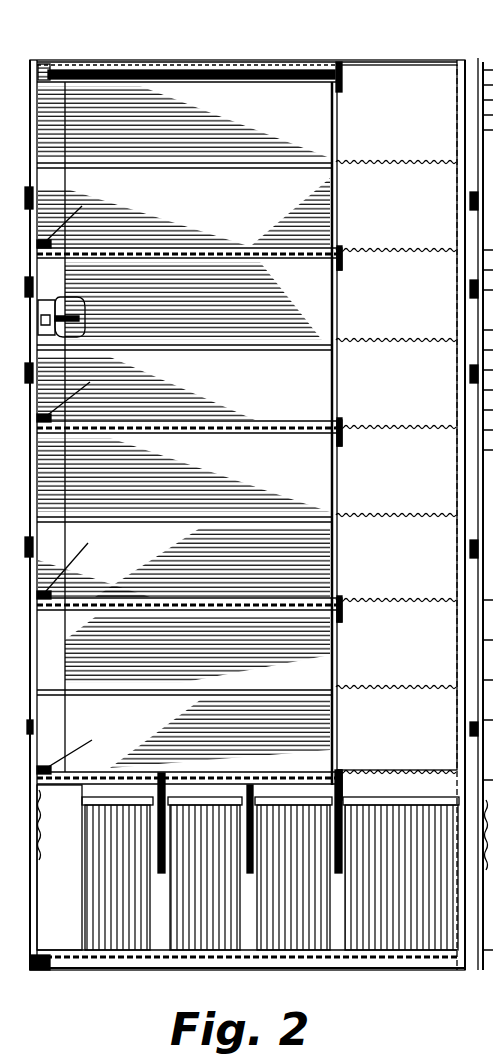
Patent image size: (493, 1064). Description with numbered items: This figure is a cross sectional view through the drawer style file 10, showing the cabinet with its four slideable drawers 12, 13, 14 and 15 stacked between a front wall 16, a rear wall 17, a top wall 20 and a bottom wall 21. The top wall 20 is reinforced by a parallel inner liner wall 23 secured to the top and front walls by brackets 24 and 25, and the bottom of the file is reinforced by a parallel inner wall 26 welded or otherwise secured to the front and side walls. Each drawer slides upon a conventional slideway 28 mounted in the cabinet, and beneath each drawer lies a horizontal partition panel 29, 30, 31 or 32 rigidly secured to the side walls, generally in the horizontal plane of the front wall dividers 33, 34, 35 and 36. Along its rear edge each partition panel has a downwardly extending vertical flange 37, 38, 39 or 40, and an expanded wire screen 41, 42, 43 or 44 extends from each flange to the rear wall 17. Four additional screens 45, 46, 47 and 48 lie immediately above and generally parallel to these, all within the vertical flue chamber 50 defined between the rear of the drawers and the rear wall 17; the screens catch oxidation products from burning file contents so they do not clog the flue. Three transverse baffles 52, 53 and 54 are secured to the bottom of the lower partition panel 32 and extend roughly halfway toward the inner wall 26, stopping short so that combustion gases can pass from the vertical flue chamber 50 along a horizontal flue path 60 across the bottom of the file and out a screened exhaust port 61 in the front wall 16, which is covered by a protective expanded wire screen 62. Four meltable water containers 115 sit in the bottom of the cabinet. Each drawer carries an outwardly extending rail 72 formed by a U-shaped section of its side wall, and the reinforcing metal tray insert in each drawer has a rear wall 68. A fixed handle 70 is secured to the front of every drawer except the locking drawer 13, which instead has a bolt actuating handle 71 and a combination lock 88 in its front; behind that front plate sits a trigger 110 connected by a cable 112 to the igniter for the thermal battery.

The drawer style file 10 is at (443, 976).
The slideable drawer 12 is at (302, 104).
The locking drawer 13 is at (310, 278).
The slideable drawer 14 is at (322, 455).
The slideable drawer 15 is at (322, 650).
The front wall 16 is at (32, 62).
The rear wall 17 is at (458, 490).
The top wall 20 is at (220, 61).
The bottom wall 21 is at (188, 970).
The inner liner wall 23 is at (286, 68).
The bracket 24 is at (348, 36).
The bracket 25 is at (58, 62).
The inner wall 26 is at (138, 958).
The slideway 28 is at (340, 248).
The horizontal partition panel 29 is at (226, 248).
The horizontal partition panel 30 is at (266, 423).
The horizontal partition panel 31 is at (204, 600).
The lower partition panel 32 is at (318, 772).
The front wall divider 33 is at (82, 206).
The front wall divider 34 is at (90, 382).
The front wall divider 35 is at (68, 548).
The front wall divider 36 is at (90, 752).
The vertical flange 37 is at (344, 264).
The vertical flange 38 is at (344, 438).
The vertical flange 39 is at (344, 612).
The vertical flange 40 is at (340, 782).
The expanded wire screen 41 is at (440, 248).
The expanded wire screen 42 is at (440, 426).
The expanded wire screen 43 is at (444, 600).
The expanded wire screen 44 is at (442, 770).
The additional screen 45 is at (392, 160).
The additional screen 46 is at (388, 340).
The additional screen 47 is at (386, 514).
The additional screen 48 is at (390, 686).
The vertical flue chamber 50 is at (414, 80).
The transverse partition panel or baffle 52 is at (342, 848).
The transverse partition panel or baffle 53 is at (254, 854).
The transverse partition panel or baffle 54 is at (164, 870).
The horizontal flue path 60 is at (336, 930).
The screened exhaust port 61 is at (40, 858).
The protective expanded wire screen 62 is at (40, 809).
The rear wall of tray 68 is at (336, 715).
The handle 70 is at (30, 186).
The bolt actuating handle 71 is at (30, 366).
The rail 72 is at (166, 174).
The combination lock 88 is at (38, 286).
The trigger 110 is at (68, 308).
The cable 112 is at (84, 322).
The cage 115 is at (136, 893).